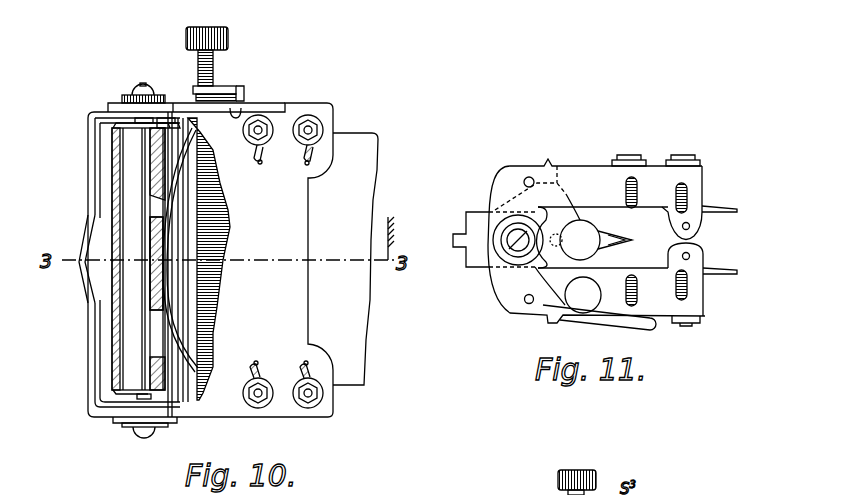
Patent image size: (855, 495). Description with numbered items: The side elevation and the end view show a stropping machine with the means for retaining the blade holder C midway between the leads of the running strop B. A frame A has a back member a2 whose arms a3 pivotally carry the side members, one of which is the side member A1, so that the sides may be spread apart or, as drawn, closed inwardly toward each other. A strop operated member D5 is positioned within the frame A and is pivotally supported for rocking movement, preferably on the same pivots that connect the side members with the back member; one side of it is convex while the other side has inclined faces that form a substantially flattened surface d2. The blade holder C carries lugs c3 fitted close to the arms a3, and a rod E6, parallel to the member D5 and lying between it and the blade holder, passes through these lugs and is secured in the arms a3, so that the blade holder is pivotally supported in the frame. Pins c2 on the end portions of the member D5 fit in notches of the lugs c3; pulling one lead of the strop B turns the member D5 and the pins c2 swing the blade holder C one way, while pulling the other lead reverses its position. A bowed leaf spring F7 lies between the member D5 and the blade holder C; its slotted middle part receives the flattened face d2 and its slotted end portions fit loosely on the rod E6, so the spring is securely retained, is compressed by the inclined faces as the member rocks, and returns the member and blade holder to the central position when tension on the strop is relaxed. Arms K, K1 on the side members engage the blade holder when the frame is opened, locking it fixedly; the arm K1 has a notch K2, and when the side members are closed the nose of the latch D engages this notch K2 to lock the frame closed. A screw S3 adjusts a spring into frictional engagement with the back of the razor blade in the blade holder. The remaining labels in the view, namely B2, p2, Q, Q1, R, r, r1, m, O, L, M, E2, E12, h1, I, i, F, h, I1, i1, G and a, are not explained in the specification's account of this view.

In FIG. 10, the strop B is at (112, 338).
In FIG. 11, the strop B is at (738, 212).
In FIG. 10, the back member a2 is at (96, 366).
In FIG. 11, the back member a2 is at (470, 262).
In FIG. 10, the arms a3 is at (110, 112).
In FIG. 11, the arms a3 is at (476, 228).
In FIG. 10, the spring lozenge p2 is at (84, 272).
In FIG. 10, the screw S3 is at (214, 64).
In FIG. 11, the screw S3 is at (580, 232).
In FIG. 10, the strop operated member D5 is at (135, 300).
In FIG. 10, the flattened surface d2 is at (155, 230).
In FIG. 10, the lugs c3 is at (178, 118).
In FIG. 10, the rod E6 is at (196, 228).
In FIG. 10, the pins c2 is at (182, 126).
In FIG. 10, the spring F7 is at (190, 344).
In FIG. 10, the blade holder C is at (214, 318).
In FIG. 10, the screw head Q is at (313, 124).
In FIG. 10, the screw head Q' Q1 is at (306, 130).
In FIG. 10, the screw R is at (323, 128).
In FIG. 10, the lever r is at (330, 138).
In FIG. 10, the pin r' r1 is at (304, 160).
In FIG. 10, the pin m is at (250, 365).
In FIG. 10, the pin O is at (258, 365).
In FIG. 10, the screw head L is at (250, 405).
In FIG. 10, the screw head M is at (258, 411).
In FIG. 10, the hanger B2 is at (357, 333).
In FIG. 11, the frame A is at (585, 241).
In FIG. 11, the arm K1 is at (532, 278).
In FIG. 11, the arm K is at (557, 166).
In FIG. 11, the pivot pin E2 is at (528, 177).
In FIG. 11, the pivot pin E'2 E12 is at (525, 303).
In FIG. 11, the notch K2 is at (542, 305).
In FIG. 11, the latch D is at (640, 330).
In FIG. 11, the side member A1 is at (692, 308).
In FIG. 11, the screw h' h1 is at (690, 274).
In FIG. 11, the screw I is at (636, 182).
In FIG. 11, the pin i is at (636, 192).
In FIG. 11, the screw F is at (686, 186).
In FIG. 11, the screw h is at (686, 194).
In FIG. 11, the screw I' I1 is at (636, 280).
In FIG. 11, the pin i' i1 is at (638, 290).
In FIG. 11, the bracket G is at (690, 292).
In FIG. 11, the plate a is at (603, 166).